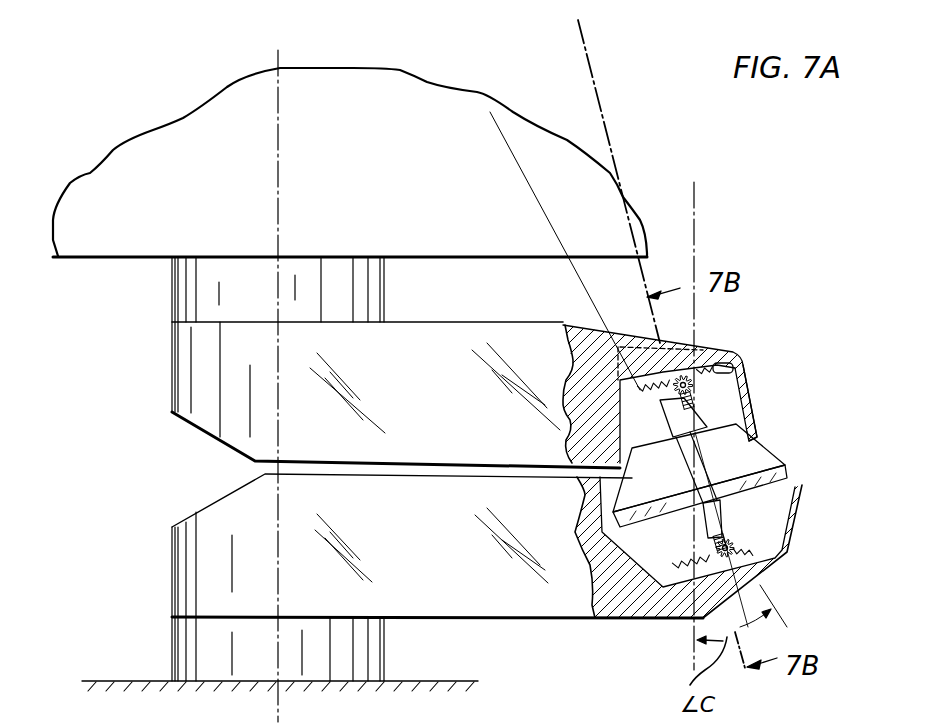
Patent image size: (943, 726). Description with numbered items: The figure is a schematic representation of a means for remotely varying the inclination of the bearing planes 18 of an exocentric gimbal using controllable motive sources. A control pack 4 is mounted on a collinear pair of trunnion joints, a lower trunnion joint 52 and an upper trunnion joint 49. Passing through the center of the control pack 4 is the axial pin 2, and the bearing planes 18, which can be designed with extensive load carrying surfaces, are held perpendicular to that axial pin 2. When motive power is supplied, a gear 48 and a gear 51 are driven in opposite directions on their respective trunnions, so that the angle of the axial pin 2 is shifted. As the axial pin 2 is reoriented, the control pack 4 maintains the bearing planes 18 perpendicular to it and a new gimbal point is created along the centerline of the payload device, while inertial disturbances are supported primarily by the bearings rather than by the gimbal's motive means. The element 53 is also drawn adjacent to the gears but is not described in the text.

The axial pin 2 is at (667, 367).
The control pack 4 is at (757, 437).
The bearing planes 18 is at (760, 441).
The gear 48 is at (695, 388).
The upper trunnion joint 49 is at (733, 368).
The gear 51 is at (727, 546).
The lower trunnion joint 52 is at (755, 552).
The spring 53 is at (665, 395).